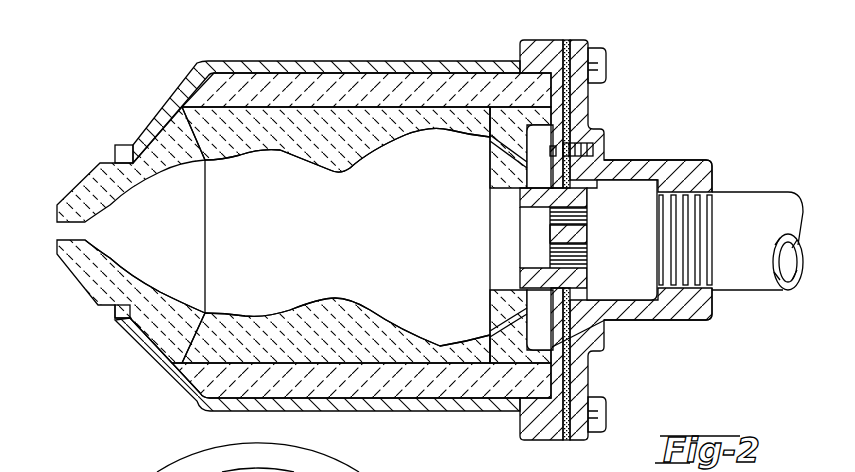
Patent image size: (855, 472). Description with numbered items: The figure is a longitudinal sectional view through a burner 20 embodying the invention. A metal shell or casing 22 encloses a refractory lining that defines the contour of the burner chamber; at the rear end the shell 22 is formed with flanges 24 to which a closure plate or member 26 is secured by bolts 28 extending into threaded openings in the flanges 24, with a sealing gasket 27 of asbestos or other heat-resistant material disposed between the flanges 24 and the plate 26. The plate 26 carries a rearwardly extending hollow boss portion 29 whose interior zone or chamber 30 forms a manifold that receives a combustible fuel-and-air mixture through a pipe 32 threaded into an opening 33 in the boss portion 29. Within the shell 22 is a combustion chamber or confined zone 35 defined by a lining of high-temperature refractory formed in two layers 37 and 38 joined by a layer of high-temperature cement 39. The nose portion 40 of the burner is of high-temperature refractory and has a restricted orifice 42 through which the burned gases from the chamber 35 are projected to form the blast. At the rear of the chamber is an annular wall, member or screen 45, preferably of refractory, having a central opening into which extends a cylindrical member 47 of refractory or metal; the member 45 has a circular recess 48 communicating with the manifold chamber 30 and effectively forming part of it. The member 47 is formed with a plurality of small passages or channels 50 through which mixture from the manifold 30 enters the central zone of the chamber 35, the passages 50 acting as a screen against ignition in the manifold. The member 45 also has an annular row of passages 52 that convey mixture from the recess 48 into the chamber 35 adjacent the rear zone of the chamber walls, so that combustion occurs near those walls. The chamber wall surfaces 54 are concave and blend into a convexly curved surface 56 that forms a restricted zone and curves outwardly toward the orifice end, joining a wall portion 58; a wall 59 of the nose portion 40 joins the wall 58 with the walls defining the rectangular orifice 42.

The nozzle assembly 20 is at (331, 44).
The shell or casing 22 is at (397, 413).
The flanges 24 is at (535, 43).
The closure plate or member 26 is at (584, 95).
The sealing gasket 27 is at (568, 388).
The bolts 28 is at (604, 67).
The hollow boss portion 29 is at (680, 167).
The interior zone or chamber 30 is at (636, 241).
The pipe 32 is at (747, 287).
The opening 33 is at (695, 183).
The combustion chamber or confined zone 35 is at (358, 246).
The refractory layer 37 is at (372, 120).
The refractory layer 38 is at (358, 78).
The layer of high-temperature cement 39 is at (258, 108).
The nose portion 40 is at (95, 302).
The restricted orifice 42 is at (62, 230).
The rear wall, member or screen 45 is at (492, 170).
The cylindrical member 47 is at (537, 203).
The circular recess 48 is at (540, 137).
The passages or channels 50 is at (550, 222).
The passages 52 is at (490, 143).
The zones or surfaces 54 is at (452, 133).
The convexly curved surface 56 is at (343, 173).
The wall portion 58 is at (258, 152).
The wall 59 is at (130, 273).